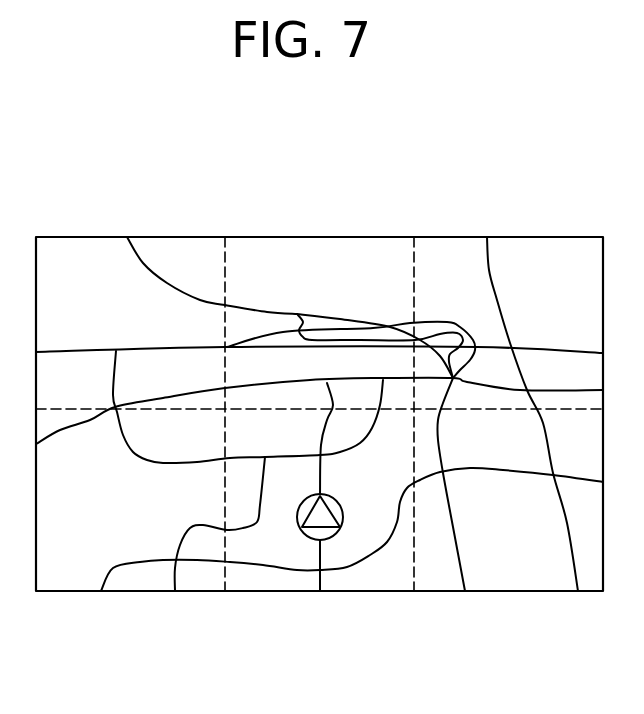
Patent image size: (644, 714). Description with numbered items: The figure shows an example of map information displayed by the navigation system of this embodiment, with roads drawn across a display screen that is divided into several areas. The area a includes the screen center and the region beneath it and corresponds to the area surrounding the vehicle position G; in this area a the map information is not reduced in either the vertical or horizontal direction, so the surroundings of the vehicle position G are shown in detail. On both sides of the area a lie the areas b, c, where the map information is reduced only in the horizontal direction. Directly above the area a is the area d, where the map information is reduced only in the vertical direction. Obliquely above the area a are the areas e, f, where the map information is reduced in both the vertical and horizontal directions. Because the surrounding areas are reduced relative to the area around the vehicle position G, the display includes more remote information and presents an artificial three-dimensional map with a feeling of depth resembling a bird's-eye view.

The area a is at (278, 585).
The area b is at (79, 585).
The area c is at (448, 585).
The area d is at (320, 248).
The area e is at (85, 248).
The area f is at (458, 248).
The vehicle position G is at (339, 502).